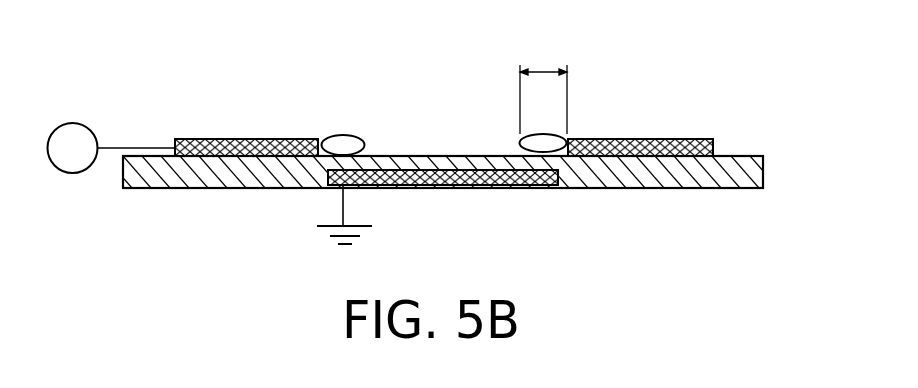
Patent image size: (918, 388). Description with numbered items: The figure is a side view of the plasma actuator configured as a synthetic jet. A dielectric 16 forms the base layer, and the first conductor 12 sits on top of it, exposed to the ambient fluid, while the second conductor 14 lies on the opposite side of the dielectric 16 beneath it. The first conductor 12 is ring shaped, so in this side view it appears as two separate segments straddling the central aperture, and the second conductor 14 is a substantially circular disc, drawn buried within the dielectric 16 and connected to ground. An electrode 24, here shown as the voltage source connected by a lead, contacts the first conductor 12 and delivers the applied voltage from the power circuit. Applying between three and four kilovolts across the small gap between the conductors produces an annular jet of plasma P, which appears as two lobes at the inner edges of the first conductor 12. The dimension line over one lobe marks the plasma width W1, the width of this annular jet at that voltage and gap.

The first conductor 12 is at (260, 139).
The second conductor 14 is at (483, 187).
The dielectric 16 is at (198, 172).
The electrode 24 is at (123, 148).
The plasma P is at (548, 140).
The plasma width W1 is at (542, 72).